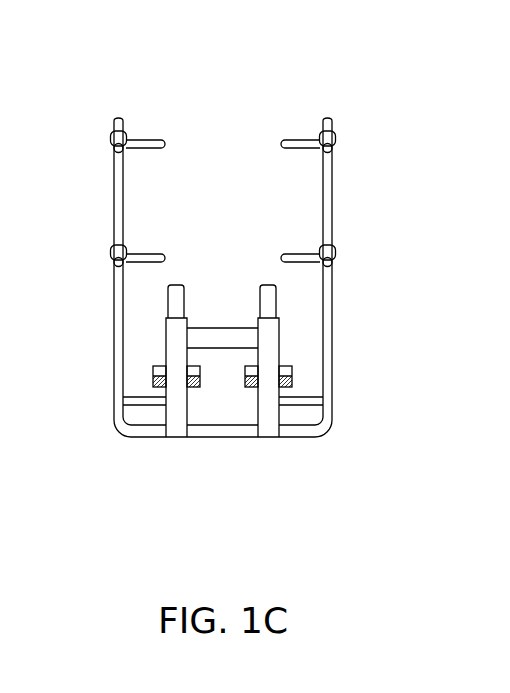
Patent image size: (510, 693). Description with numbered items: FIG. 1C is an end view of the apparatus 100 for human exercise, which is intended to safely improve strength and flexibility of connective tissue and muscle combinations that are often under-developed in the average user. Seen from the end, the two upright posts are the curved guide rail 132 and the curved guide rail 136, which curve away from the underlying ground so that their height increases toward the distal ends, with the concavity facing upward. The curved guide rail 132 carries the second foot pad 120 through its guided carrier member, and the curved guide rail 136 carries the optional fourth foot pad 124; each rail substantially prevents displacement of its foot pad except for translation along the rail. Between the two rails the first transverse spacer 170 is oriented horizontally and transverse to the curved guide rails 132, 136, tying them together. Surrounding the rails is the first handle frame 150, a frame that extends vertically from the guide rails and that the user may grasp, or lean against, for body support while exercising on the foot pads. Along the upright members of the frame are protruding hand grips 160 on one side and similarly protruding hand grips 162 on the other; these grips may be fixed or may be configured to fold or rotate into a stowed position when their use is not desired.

The apparatus 100 is at (356, 72).
The second foot pad 120 is at (290, 377).
The fourth foot pad 124 is at (157, 376).
The second curved guide rail 132 is at (268, 350).
The curved guide rail 136 is at (177, 349).
The first handle frame 150 is at (332, 200).
The protruding hand grips 160 is at (298, 143).
The protruding hand grips 162 is at (147, 143).
The first transverse spacer 170 is at (242, 338).